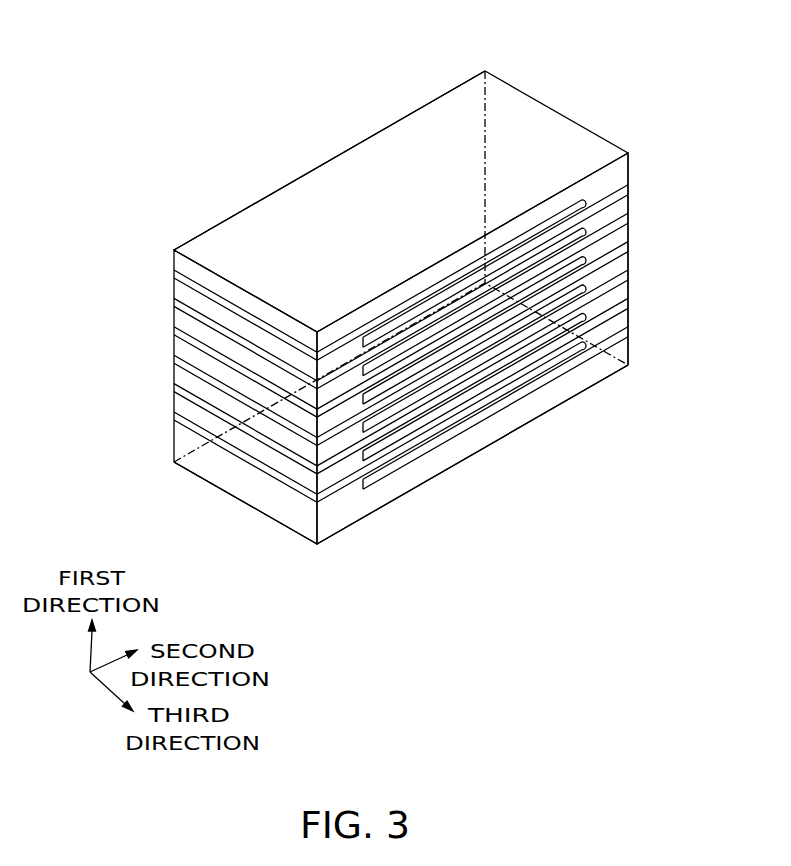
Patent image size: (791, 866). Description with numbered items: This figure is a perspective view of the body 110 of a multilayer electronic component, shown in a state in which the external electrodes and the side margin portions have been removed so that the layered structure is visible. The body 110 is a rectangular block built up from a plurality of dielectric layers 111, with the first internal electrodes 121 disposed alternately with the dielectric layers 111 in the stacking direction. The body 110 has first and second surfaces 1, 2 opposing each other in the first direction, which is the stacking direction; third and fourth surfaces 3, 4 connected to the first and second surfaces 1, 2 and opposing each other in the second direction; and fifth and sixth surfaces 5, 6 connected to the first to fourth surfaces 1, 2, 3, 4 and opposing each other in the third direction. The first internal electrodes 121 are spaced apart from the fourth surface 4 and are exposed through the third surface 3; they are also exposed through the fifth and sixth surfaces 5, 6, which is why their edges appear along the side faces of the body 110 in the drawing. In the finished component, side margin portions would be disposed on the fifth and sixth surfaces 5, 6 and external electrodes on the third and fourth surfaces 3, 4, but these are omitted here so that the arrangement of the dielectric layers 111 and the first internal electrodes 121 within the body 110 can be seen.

The first surface 1 is at (458, 452).
The second surface 2 is at (434, 118).
The third surface 3 is at (236, 450).
The fourth surface 4 is at (553, 140).
The fifth surface 5 is at (260, 205).
The sixth surface 6 is at (578, 371).
The body 110 is at (377, 292).
The dielectric layer 111 is at (358, 376).
The first internal electrode 121 is at (203, 293).